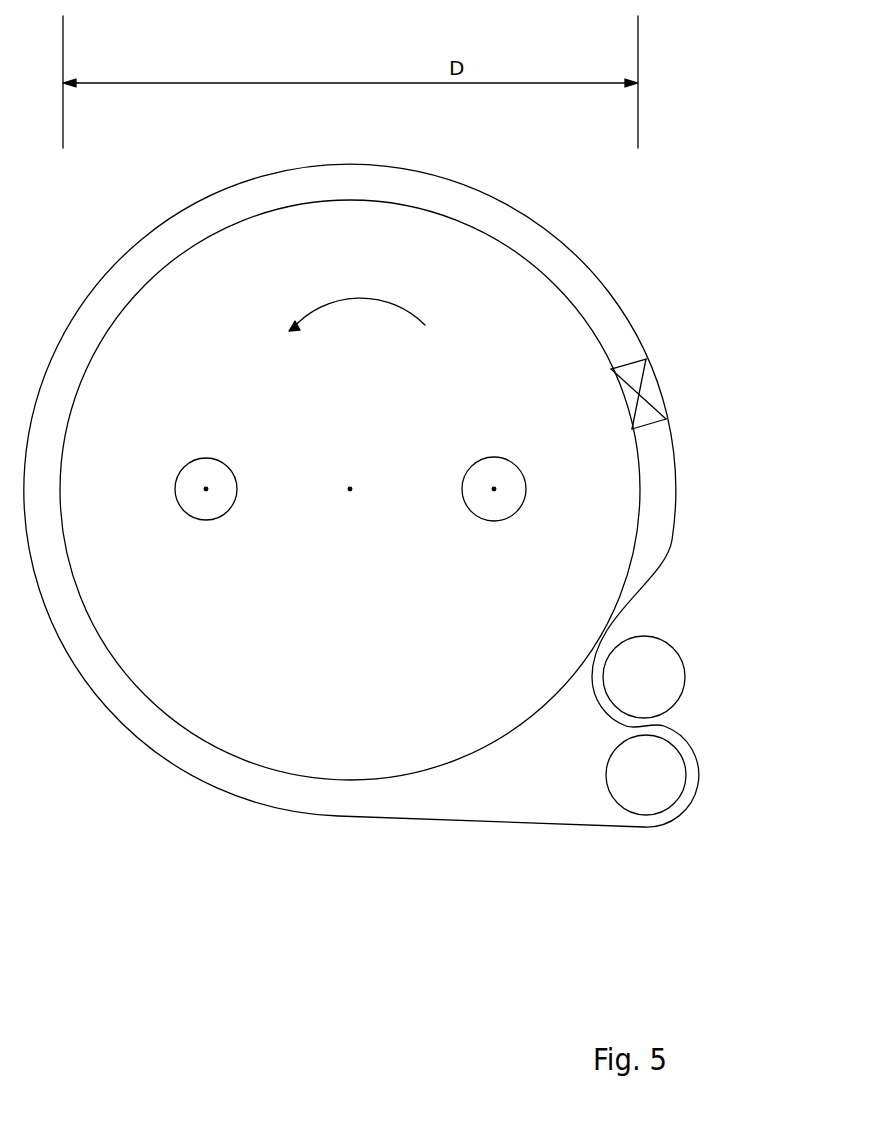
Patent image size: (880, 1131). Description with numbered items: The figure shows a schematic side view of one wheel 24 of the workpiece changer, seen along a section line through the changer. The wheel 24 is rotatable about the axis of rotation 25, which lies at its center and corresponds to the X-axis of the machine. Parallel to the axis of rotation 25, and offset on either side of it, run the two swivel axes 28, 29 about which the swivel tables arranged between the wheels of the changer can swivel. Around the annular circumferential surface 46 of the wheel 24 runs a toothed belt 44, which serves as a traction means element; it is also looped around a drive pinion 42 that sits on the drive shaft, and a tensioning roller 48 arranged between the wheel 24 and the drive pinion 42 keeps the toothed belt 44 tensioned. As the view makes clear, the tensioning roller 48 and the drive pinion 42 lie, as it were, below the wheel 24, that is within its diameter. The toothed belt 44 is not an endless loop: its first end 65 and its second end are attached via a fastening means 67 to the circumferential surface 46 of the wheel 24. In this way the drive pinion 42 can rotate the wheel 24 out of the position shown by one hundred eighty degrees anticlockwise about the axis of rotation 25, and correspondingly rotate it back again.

The wheel 24 is at (378, 549).
The axis of rotation 25 is at (352, 487).
The swivel axis 28 is at (494, 491).
The swivel axis 29 is at (205, 470).
The drive pinion 42 is at (646, 775).
The toothed belt 44 is at (538, 823).
The circumferential surface 46 is at (544, 276).
The tensioning roller 48 is at (644, 677).
The first end 65 is at (623, 357).
The fastening means 67 is at (651, 390).